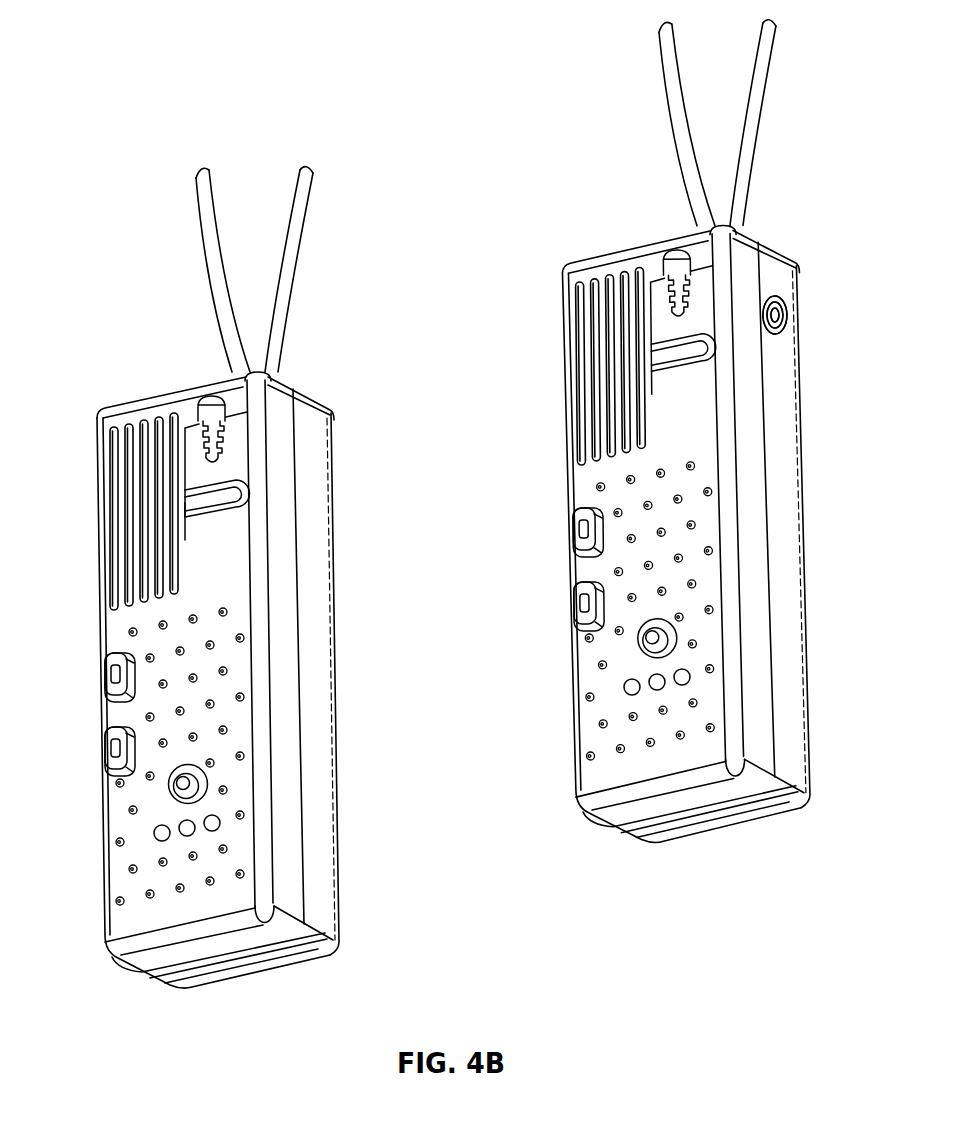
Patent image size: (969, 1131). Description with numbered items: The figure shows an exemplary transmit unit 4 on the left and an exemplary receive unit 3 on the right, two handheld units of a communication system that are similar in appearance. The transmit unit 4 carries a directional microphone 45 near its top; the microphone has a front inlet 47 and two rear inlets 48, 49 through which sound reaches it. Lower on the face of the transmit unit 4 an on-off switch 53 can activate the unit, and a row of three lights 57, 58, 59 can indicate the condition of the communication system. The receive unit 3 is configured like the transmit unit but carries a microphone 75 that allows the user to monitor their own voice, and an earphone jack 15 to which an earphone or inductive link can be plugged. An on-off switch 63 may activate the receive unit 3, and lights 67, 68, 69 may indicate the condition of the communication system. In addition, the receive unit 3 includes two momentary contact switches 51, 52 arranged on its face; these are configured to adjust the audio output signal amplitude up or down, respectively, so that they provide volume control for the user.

The receive unit 3 is at (793, 642).
The transmit unit 4 is at (327, 793).
The earphone jack 15 is at (778, 314).
The directional microphone 45 is at (233, 460).
The front inlet 47 is at (211, 397).
The rear inlet 48 is at (173, 519).
The rear inlet 49 is at (247, 499).
The momentary contact switch 51 is at (583, 533).
The momentary contact switch 52 is at (583, 601).
The on-off switch 53 is at (167, 795).
The light 57 is at (156, 838).
The light 58 is at (181, 832).
The light 59 is at (219, 823).
The on-off switch 63 is at (648, 643).
The light 67 is at (626, 690).
The light 68 is at (651, 689).
The light 69 is at (690, 678).
The microphone 75 is at (705, 316).